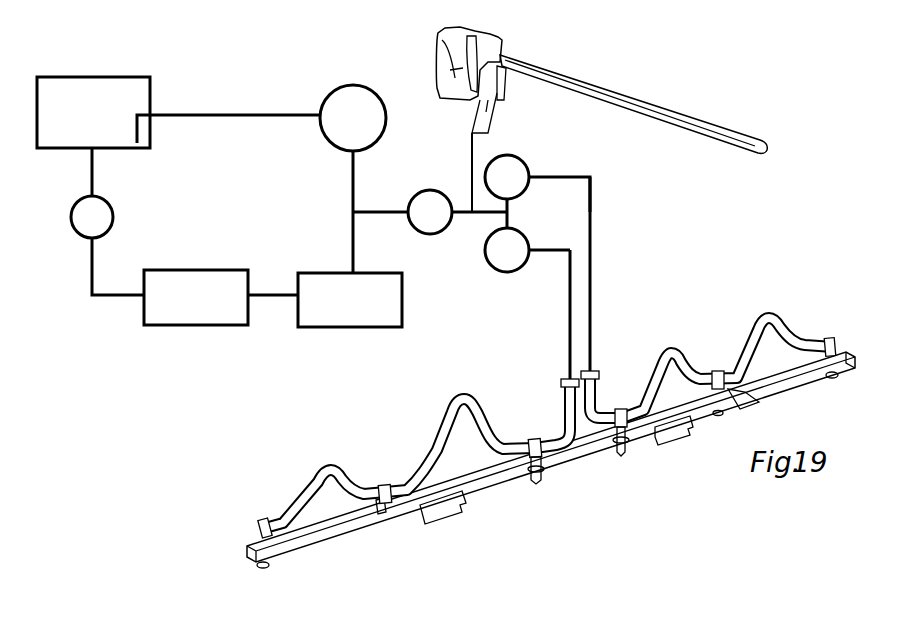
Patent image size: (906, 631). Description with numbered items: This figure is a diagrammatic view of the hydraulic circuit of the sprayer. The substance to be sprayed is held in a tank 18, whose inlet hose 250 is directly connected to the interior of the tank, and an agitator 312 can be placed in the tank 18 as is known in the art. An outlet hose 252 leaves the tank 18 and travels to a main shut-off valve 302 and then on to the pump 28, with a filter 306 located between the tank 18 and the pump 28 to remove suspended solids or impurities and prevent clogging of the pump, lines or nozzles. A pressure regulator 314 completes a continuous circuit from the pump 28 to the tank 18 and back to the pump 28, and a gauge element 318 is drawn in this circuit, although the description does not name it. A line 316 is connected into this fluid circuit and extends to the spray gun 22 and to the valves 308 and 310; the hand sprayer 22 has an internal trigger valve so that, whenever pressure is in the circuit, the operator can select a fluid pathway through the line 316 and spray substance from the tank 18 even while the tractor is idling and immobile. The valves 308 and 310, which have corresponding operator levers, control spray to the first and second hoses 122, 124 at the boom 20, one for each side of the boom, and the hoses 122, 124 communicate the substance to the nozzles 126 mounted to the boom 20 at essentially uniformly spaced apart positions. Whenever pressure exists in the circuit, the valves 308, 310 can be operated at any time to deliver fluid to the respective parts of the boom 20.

The tank 18 is at (131, 93).
The agitator 312 is at (132, 127).
The pressure regulator 314 is at (328, 99).
The line 316 is at (462, 210).
The pressure gauge 318 is at (426, 193).
The spray gun 22 is at (474, 32).
The inlet hose 250 is at (212, 117).
The outlet hose 252 is at (92, 173).
The main shut-off valve 302 is at (112, 210).
The filter 306 is at (312, 275).
The pump 28 is at (216, 277).
The valve 308 is at (514, 167).
The valve 310 is at (498, 261).
The boom 20 is at (427, 431).
The first hose 122 is at (570, 353).
The second hose 124 is at (590, 298).
The nozzles 126 is at (834, 346).